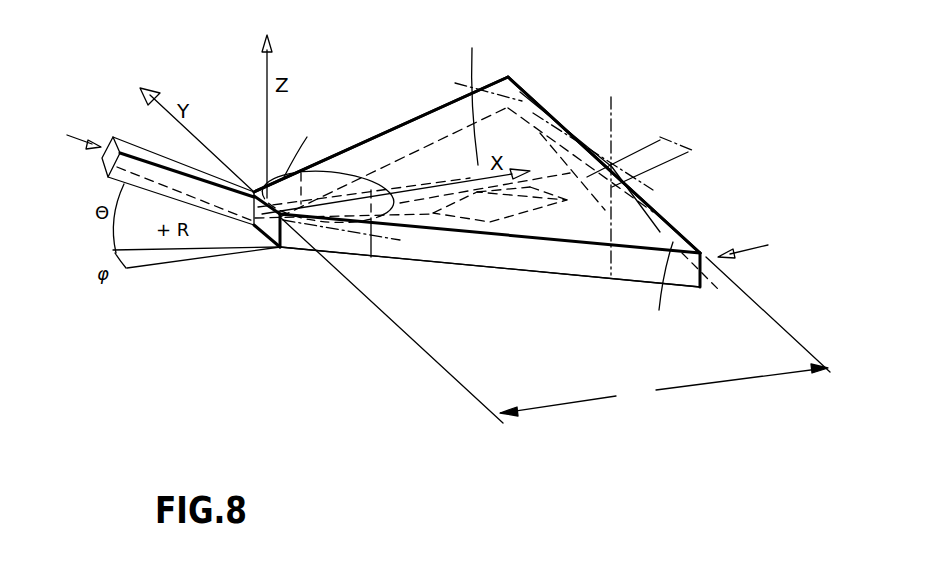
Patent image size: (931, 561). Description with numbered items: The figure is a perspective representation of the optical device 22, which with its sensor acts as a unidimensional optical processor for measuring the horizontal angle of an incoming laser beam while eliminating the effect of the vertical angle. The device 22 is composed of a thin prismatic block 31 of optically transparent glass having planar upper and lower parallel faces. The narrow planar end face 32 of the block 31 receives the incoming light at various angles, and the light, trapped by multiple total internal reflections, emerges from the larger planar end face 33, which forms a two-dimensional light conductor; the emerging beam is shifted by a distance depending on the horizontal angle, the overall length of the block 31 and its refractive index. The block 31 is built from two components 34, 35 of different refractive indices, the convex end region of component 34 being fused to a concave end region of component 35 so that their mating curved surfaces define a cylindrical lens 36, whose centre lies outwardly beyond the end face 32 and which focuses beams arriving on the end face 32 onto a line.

The optical device 22 is at (646, 101).
The prismatic block 31 is at (421, 106).
The narrow planar end face 32 is at (266, 232).
The larger planar end face 33 is at (688, 238).
The component 34 is at (322, 250).
The component 35 is at (528, 258).
The cylindrical lens 36 is at (393, 214).